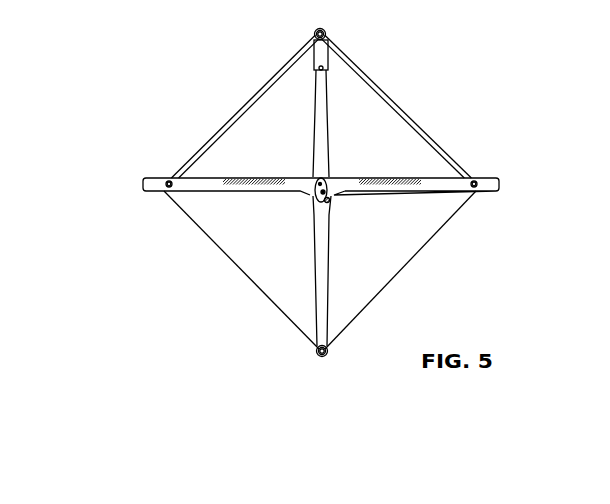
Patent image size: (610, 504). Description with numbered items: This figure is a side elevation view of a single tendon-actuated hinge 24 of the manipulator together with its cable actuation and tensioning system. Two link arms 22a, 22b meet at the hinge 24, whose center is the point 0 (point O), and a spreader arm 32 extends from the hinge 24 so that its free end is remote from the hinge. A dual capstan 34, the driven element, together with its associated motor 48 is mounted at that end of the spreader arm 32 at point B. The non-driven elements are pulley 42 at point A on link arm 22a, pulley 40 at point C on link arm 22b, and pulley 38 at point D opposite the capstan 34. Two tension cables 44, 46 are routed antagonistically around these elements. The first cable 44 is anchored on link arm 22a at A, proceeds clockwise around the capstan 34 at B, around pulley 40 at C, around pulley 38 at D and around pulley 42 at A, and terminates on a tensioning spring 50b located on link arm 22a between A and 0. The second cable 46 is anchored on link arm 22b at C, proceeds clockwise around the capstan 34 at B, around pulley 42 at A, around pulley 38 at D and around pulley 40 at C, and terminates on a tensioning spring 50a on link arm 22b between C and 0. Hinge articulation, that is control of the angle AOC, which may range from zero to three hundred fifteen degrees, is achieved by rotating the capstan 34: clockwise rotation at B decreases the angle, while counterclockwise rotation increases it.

The link arm 22a is at (224, 191).
The link arm 22b is at (440, 191).
The hinge 24 is at (328, 200).
The spreader arm 32 is at (329, 128).
The capstan 34 is at (318, 29).
The pulley 38 is at (318, 353).
The pulley 40 is at (477, 191).
The pulley 42 is at (164, 179).
The first tension cable 44 is at (270, 80).
The second tension cable 46 is at (390, 101).
The motor 48 is at (312, 68).
The tensioning spring 50a is at (401, 177).
The tensioning spring 50b is at (233, 178).
The hinge center point O 0 is at (318, 177).
The point A is at (143, 185).
The point B is at (327, 34).
The point C is at (475, 179).
The point D is at (325, 357).